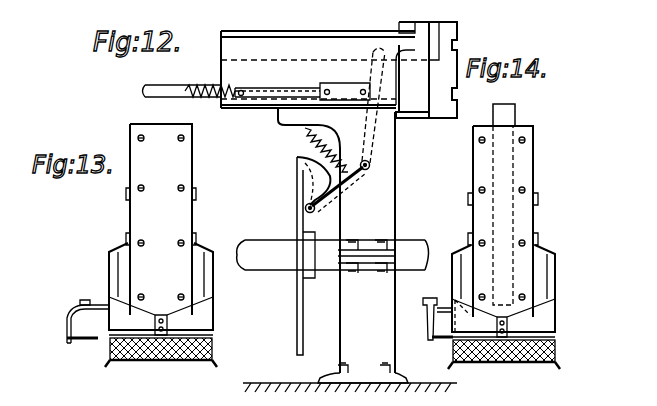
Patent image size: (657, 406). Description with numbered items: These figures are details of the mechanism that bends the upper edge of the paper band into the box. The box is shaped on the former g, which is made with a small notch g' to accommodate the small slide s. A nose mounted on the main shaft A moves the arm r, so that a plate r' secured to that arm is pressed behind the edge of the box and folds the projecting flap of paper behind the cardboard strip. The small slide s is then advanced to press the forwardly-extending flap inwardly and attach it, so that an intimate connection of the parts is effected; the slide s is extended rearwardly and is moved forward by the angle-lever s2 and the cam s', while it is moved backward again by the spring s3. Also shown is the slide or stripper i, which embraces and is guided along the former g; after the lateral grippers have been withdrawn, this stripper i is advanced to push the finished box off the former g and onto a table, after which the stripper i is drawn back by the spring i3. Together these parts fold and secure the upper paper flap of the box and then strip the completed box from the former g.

In FIG. 12, the notch g' is at (325, 69).
In FIG. 13, the notch g' is at (161, 219).
In FIG. 14, the notch g' is at (503, 221).
In FIG. 12, the former g is at (443, 70).
In FIG. 13, the former g is at (173, 346).
In FIG. 14, the former g is at (510, 352).
In FIG. 12, the slide or stripper i is at (412, 70).
In FIG. 13, the slide or stripper i is at (161, 289).
In FIG. 14, the slide or stripper i is at (503, 291).
In FIG. 12, the spring i3 is at (198, 85).
In FIG. 12, the small slide s is at (437, 32).
In FIG. 13, the small slide s is at (143, 325).
In FIG. 14, the small slide s is at (485, 218).
In FIG. 12, the cam s' is at (303, 256).
In FIG. 12, the angle-lever s2 is at (348, 137).
In FIG. 12, the spring s3 is at (303, 133).
In FIG. 12, the main shaft A is at (333, 256).
In FIG. 13, the arm r is at (78, 321).
In FIG. 14, the arm r is at (431, 322).
In FIG. 13, the plate r' is at (82, 349).
In FIG. 14, the plate r' is at (442, 351).